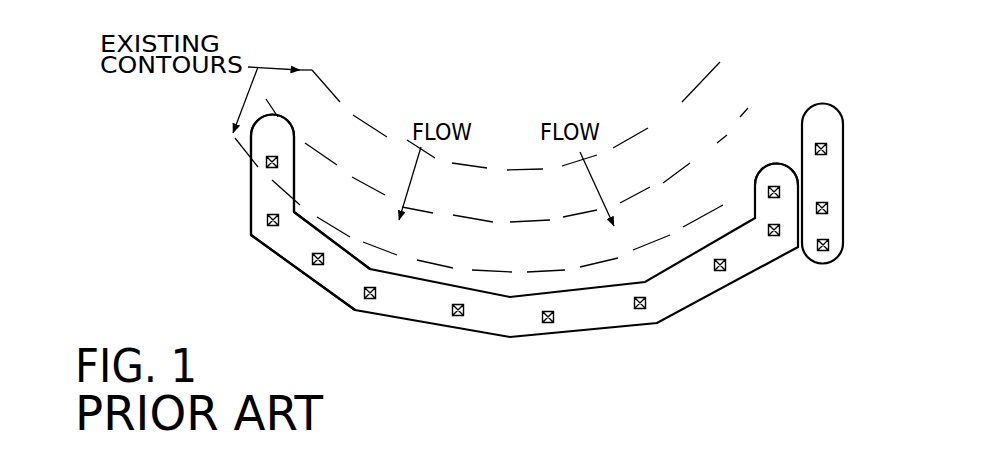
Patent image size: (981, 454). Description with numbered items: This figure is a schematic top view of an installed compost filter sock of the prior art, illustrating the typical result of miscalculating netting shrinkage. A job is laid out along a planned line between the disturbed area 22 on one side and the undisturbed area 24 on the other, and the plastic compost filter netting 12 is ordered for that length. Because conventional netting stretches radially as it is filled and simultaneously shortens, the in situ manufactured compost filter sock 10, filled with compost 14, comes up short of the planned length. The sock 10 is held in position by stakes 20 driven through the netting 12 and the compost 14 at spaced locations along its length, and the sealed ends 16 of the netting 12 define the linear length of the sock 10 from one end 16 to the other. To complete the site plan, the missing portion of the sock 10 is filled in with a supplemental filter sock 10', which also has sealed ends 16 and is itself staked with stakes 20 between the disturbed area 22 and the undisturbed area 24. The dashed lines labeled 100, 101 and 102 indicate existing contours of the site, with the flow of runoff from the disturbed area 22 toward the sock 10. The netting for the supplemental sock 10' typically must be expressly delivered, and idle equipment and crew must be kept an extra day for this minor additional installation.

The compost filter sock 10 is at (521, 245).
The supplemental filter sock 10' is at (878, 184).
The compost filter netting 12 is at (251, 193).
The compost 14 is at (283, 242).
The ends of the netting 16 is at (252, 127).
The stakes 20 is at (648, 312).
The disturbed area 22 is at (510, 97).
The undisturbed area 24 is at (492, 405).
The existing contour 100 is at (499, 205).
The existing contour 101 is at (507, 160).
The existing contour 102 is at (516, 116).